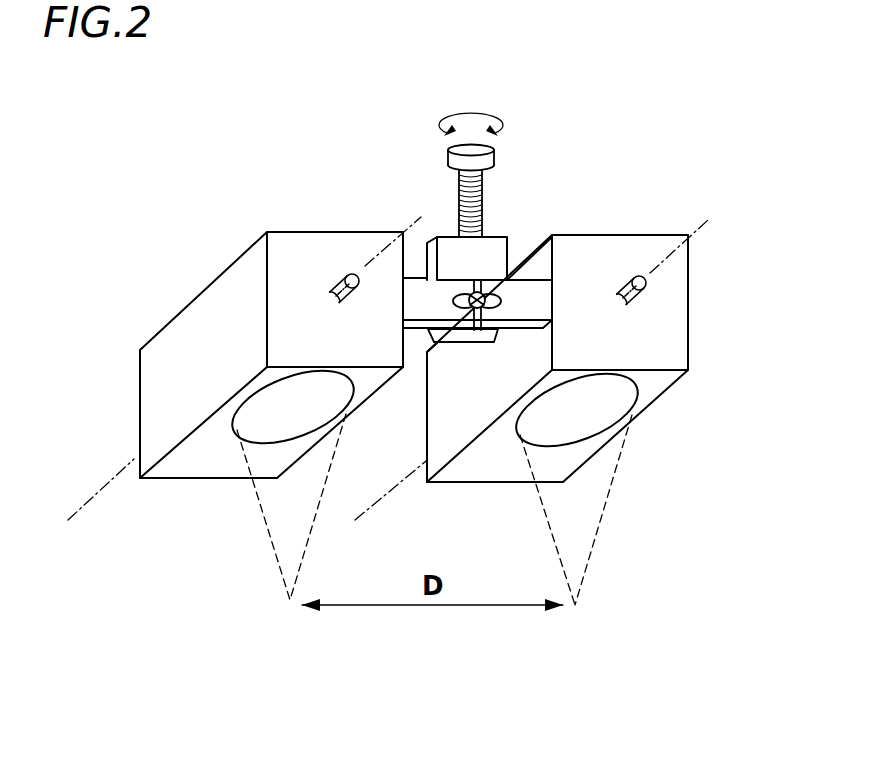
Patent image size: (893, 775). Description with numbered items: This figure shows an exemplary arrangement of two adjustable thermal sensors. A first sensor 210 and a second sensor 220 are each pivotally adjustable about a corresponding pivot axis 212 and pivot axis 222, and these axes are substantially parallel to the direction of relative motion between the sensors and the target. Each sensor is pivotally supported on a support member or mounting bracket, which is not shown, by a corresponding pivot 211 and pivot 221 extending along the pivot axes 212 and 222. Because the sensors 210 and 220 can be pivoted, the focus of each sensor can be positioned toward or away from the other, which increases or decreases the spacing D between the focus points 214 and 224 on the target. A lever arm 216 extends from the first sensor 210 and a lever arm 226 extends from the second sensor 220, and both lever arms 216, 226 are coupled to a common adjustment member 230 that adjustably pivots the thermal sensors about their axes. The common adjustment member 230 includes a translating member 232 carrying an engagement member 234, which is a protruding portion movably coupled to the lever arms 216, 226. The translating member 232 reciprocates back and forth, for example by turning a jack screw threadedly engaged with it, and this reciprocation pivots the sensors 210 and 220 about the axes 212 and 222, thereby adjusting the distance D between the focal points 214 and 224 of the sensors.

The first thermal sensor 210 is at (154, 326).
The pivot 211 is at (328, 288).
The pivot axis 212 is at (98, 490).
The focus point 214 is at (290, 600).
The lever arm 216 is at (417, 293).
The second thermal sensor 220 is at (605, 226).
The pivot 221 is at (625, 278).
The pivot axis 222 is at (698, 233).
The focus point 224 is at (575, 605).
The lever arm 226 is at (533, 291).
The common adjustment member 230 is at (448, 192).
The translating member 232 is at (486, 245).
The engagement member 234 is at (500, 300).